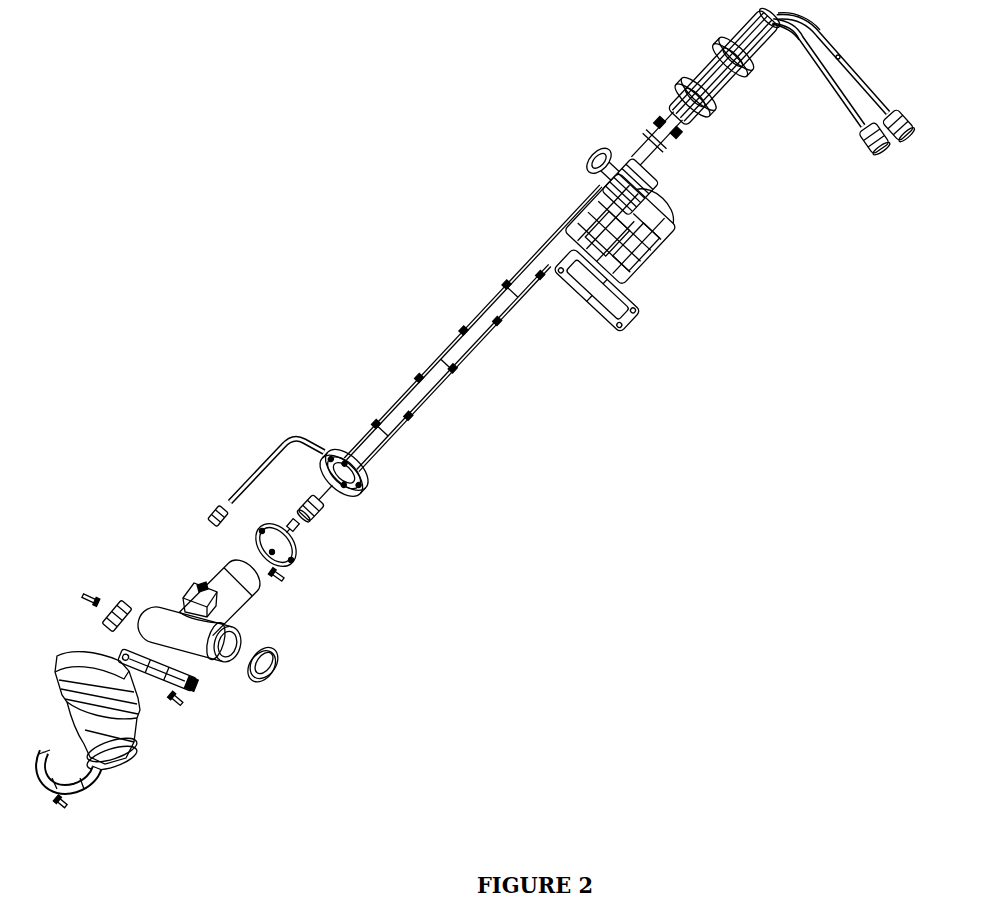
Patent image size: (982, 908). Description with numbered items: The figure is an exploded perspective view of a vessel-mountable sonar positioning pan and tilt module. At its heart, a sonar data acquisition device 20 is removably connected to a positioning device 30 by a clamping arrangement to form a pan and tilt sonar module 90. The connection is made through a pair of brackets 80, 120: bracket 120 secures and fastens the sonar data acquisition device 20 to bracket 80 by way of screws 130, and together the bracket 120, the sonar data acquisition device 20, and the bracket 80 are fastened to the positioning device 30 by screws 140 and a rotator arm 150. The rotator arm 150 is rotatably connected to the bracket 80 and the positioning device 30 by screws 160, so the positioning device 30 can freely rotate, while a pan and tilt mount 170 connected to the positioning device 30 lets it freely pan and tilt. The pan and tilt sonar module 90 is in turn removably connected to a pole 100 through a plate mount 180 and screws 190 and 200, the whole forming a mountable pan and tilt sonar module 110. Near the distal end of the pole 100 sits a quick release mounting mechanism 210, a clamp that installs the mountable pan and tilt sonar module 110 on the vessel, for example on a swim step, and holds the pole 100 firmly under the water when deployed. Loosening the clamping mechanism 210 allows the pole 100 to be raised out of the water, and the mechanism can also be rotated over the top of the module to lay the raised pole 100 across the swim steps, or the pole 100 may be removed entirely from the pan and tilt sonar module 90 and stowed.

The sonar data acquisition device 20 is at (70, 660).
The positioning device 30 is at (246, 608).
The bracket 80 is at (198, 688).
The pan and tilt sonar module 90 is at (340, 639).
The pole 100 is at (452, 345).
The mountable pan and tilt sonar module 110 is at (454, 97).
The bracket 120 is at (93, 785).
The screws 130 is at (64, 808).
The screws 140 is at (181, 706).
The rotator arm 150 is at (120, 601).
The screws 160 is at (85, 597).
The pan and tilt mount 170 is at (276, 682).
The plate mount 180 is at (298, 554).
The screws 190 is at (284, 579).
The screws 200 is at (302, 528).
The quick release mounting mechanism 210 is at (614, 335).